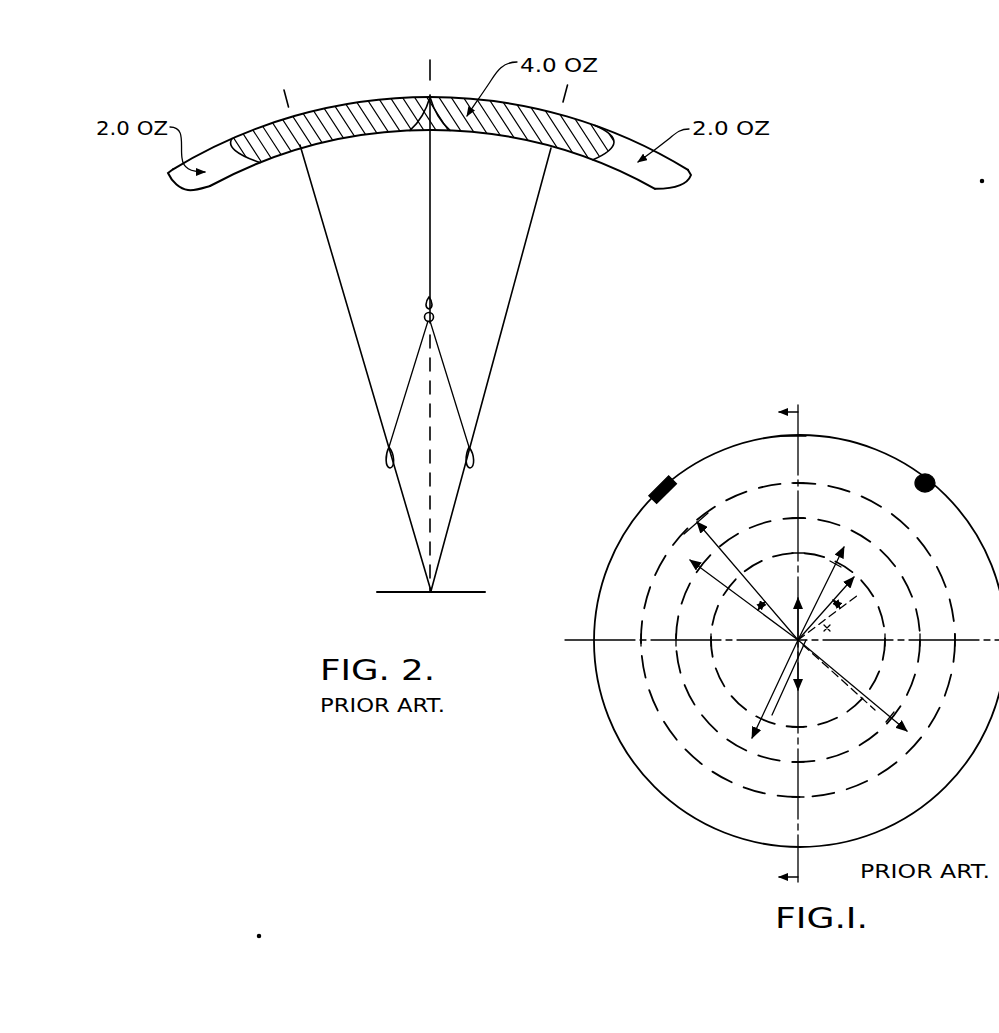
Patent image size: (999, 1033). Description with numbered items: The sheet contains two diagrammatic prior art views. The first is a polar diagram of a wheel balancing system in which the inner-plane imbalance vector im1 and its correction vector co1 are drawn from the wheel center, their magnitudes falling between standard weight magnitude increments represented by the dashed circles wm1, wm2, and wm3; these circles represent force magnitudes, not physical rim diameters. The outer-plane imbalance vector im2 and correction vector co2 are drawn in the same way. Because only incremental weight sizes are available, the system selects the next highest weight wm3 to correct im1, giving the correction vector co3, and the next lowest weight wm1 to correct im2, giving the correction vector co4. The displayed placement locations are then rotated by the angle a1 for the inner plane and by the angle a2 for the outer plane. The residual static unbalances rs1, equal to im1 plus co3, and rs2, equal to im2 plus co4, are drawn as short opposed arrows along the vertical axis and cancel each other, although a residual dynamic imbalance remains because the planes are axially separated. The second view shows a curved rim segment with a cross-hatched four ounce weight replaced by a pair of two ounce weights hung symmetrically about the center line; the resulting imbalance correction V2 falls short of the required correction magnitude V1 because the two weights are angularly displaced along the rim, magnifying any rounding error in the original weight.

In FIG. 2, the required correction magnitude V1 is at (437, 298).
In FIG. 2, the resulting imbalance correction V2 is at (438, 317).
In FIG. 1, the residual static unbalance rs1 is at (797, 596).
In FIG. 1, the residual static unbalance rs2 is at (803, 698).
In FIG. 1, the inner-plane correction vector co1 is at (680, 556).
In FIG. 1, the outer-plane correction vector co2 is at (902, 529).
In FIG. 1, the inner-plane incremental correction vector co3 is at (697, 522).
In FIG. 1, the outer-plane incremental correction vector co4 is at (852, 583).
In FIG. 1, the inner-plane imbalance vector im1 is at (874, 695).
In FIG. 1, the outer-plane imbalance vector im2 is at (748, 747).
In FIG. 1, the inner plane placement angle a1 is at (756, 618).
In FIG. 1, the outer plane placement angle a2 is at (842, 610).
In FIG. 1, the weight magnitude increment circle wm1 is at (721, 710).
In FIG. 1, the weight magnitude increment circle wm2 is at (692, 740).
In FIG. 1, the weight magnitude increment circle wm3 is at (666, 760).